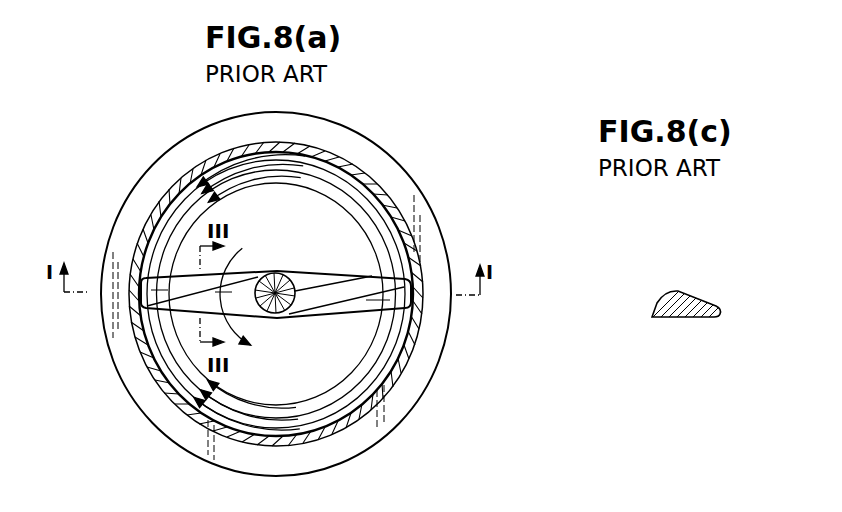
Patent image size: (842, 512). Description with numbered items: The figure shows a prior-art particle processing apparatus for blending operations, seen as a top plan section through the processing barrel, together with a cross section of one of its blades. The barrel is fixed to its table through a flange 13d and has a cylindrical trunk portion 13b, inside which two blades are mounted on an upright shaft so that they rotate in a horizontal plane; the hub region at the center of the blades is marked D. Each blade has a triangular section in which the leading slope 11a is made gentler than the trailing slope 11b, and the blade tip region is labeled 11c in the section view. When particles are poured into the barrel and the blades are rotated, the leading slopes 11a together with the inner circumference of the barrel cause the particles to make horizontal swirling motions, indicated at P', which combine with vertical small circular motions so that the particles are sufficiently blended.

The leading slope 11a is at (152, 325).
The trailing slope 11b is at (660, 296).
The blade tapered edge portion 11c is at (702, 303).
The cylindrical trunk portion 13b is at (400, 368).
The flange 13d is at (442, 334).
The horizontal swirling motions P' is at (297, 279).
The hub / shaft diameter D is at (293, 293).